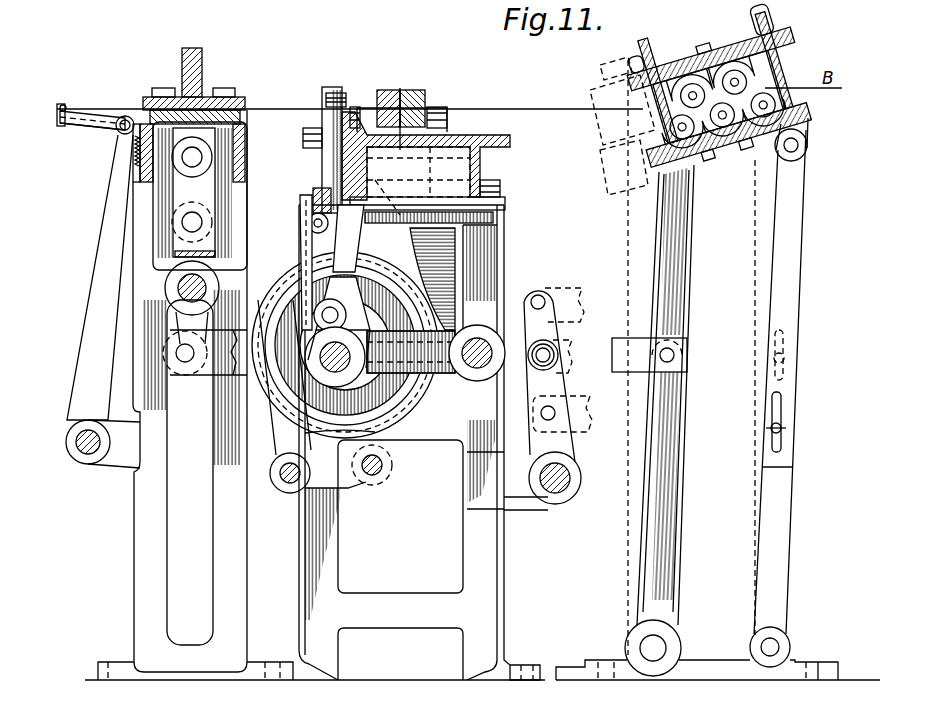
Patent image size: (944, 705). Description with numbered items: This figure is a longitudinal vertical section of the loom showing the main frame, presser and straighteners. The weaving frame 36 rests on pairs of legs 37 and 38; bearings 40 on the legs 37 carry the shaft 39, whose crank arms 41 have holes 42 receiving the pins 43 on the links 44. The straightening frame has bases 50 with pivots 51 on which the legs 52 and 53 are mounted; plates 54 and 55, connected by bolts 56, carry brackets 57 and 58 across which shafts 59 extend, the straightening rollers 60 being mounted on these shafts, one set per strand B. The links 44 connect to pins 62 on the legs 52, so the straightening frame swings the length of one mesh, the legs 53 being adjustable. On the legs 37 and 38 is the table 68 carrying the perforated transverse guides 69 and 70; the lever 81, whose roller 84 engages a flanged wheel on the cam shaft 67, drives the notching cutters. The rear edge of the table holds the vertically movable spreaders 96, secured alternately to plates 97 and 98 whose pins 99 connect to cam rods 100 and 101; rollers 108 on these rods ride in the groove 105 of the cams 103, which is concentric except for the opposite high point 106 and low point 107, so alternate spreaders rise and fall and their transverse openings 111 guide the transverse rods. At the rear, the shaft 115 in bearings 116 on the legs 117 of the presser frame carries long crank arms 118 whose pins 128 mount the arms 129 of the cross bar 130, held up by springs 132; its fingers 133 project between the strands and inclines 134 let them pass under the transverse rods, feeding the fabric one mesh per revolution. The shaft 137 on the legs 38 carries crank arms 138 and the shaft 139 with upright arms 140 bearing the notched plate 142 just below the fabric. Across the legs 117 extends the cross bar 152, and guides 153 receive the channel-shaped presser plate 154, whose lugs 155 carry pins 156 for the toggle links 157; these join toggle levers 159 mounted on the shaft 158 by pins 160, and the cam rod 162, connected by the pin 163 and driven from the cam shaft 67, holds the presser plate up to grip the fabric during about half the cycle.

The weaving frame 36 is at (466, 206).
The legs 37 is at (419, 442).
The legs 38 is at (387, 654).
The shaft 39 is at (563, 492).
The bearings 40 is at (527, 505).
The crank arms 41 is at (574, 441).
The holes 42 is at (556, 412).
The pins 43 is at (553, 354).
The links 44 is at (612, 355).
The bases 50 is at (697, 670).
The pivots 51 is at (779, 640).
The legs 52 is at (690, 520).
The legs 53 is at (781, 521).
The plate 54 is at (700, 50).
The plate 55 is at (735, 150).
The bolts 56 is at (660, 124).
The brackets 57 is at (723, 60).
The brackets 58 is at (760, 146).
The shafts 59 is at (690, 110).
The straightening rollers 60 is at (772, 96).
The pins 62 is at (676, 353).
The cam shaft 67 is at (350, 366).
The table 68 is at (472, 133).
The transverse guide 69 is at (384, 90).
The transverse guide 70 is at (412, 90).
The lever 81 is at (446, 288).
The roller 84 is at (463, 376).
The spreaders 96 is at (336, 87).
The plate 97 is at (313, 195).
The plate 98 is at (375, 185).
The pins 99 is at (362, 222).
The cam rod 100 is at (318, 253).
The cam rod 101 is at (363, 250).
The cams 103 is at (360, 378).
The groove 105 is at (386, 305).
The high point 106 is at (393, 463).
The low point 107 is at (382, 285).
The rollers 108 is at (288, 278).
The transverse openings 111 is at (326, 100).
The shaft 115 is at (85, 462).
The bearings 116 is at (105, 464).
The legs 117 is at (195, 395).
The long crank arms 118 is at (95, 302).
The pins 128 is at (120, 131).
The arms 129 is at (90, 122).
The cross bar 130 is at (76, 128).
The springs 132 is at (138, 160).
The fingers 133 is at (66, 106).
The inclines 134 is at (67, 112).
The shaft 137 is at (384, 473).
The crank arms 138 is at (342, 478).
The shaft 139 is at (288, 486).
The upright arms 140 is at (282, 451).
The notched plate 142 is at (303, 142).
The cross bar 152 is at (203, 62).
The guides 153 is at (249, 146).
The presser plate 154 is at (244, 105).
The depending lugs 155 is at (178, 96).
The pins 156 is at (205, 158).
The toggle links 157 is at (194, 192).
The shaft 158 is at (178, 290).
The toggle levers 159 is at (200, 245).
The pins 160 is at (182, 222).
The cam rod 162 is at (214, 380).
The pin 163 is at (188, 362).